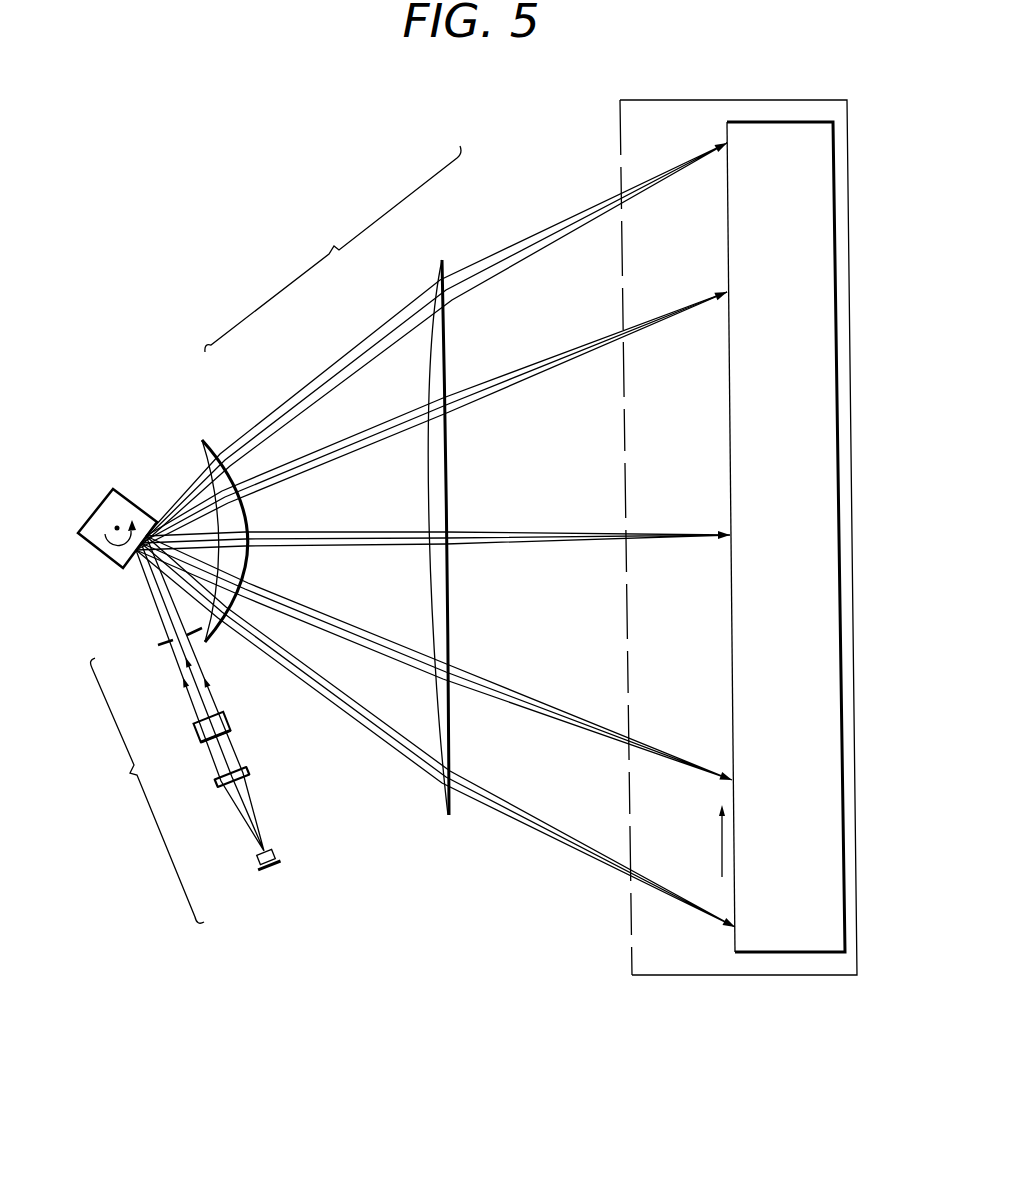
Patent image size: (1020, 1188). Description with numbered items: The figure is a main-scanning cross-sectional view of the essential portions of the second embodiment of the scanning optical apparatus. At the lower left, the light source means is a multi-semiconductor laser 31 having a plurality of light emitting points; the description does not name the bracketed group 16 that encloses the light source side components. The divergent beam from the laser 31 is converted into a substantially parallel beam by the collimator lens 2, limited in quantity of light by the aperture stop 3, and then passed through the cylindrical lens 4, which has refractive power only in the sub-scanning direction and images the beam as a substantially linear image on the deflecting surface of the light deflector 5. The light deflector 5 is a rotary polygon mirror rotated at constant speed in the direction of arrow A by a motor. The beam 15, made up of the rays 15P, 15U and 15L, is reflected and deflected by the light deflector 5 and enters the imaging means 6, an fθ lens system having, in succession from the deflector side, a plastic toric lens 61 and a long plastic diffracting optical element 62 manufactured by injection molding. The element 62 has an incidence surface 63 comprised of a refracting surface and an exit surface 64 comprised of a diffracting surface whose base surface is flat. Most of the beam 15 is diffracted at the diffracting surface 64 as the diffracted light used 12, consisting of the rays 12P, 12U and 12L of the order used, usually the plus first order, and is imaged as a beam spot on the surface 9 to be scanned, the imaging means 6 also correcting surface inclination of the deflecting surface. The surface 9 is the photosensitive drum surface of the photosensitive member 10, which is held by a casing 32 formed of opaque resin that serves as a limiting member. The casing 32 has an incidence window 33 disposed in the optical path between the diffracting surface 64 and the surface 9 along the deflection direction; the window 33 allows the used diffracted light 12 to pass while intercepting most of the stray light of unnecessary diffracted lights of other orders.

The collimator lens 2 is at (217, 787).
The aperture stop 3 is at (158, 645).
The cylindrical lens 4 is at (197, 735).
The light deflector 5 is at (110, 560).
The direction of rotation A is at (106, 552).
The imaging means 6 is at (344, 508).
The toric lens 61 is at (205, 440).
The long diffracting optical element 62 is at (436, 521).
The incidence surface 63 is at (437, 806).
The exit surface 64 is at (450, 816).
The surface to be scanned 9 is at (741, 887).
The photosensitive member 10 is at (845, 882).
The diffracted light used 12 is at (585, 371).
The upper ray of diffracted light used 12U is at (497, 377).
The principal ray of diffracted light used 12P is at (547, 362).
The lower ray of diffracted light used 12L is at (523, 381).
The beam reflected and deflected by the light deflector 15 is at (335, 455).
The upper ray of deflected beam 15U is at (305, 455).
The principal ray of deflected beam 15P is at (322, 457).
The lower ray of deflected beam 15L is at (380, 439).
The light source unit 16 is at (186, 729).
The multi-semiconductor laser 31 is at (257, 873).
The casing 32 is at (690, 976).
The incidence window 33 is at (628, 812).